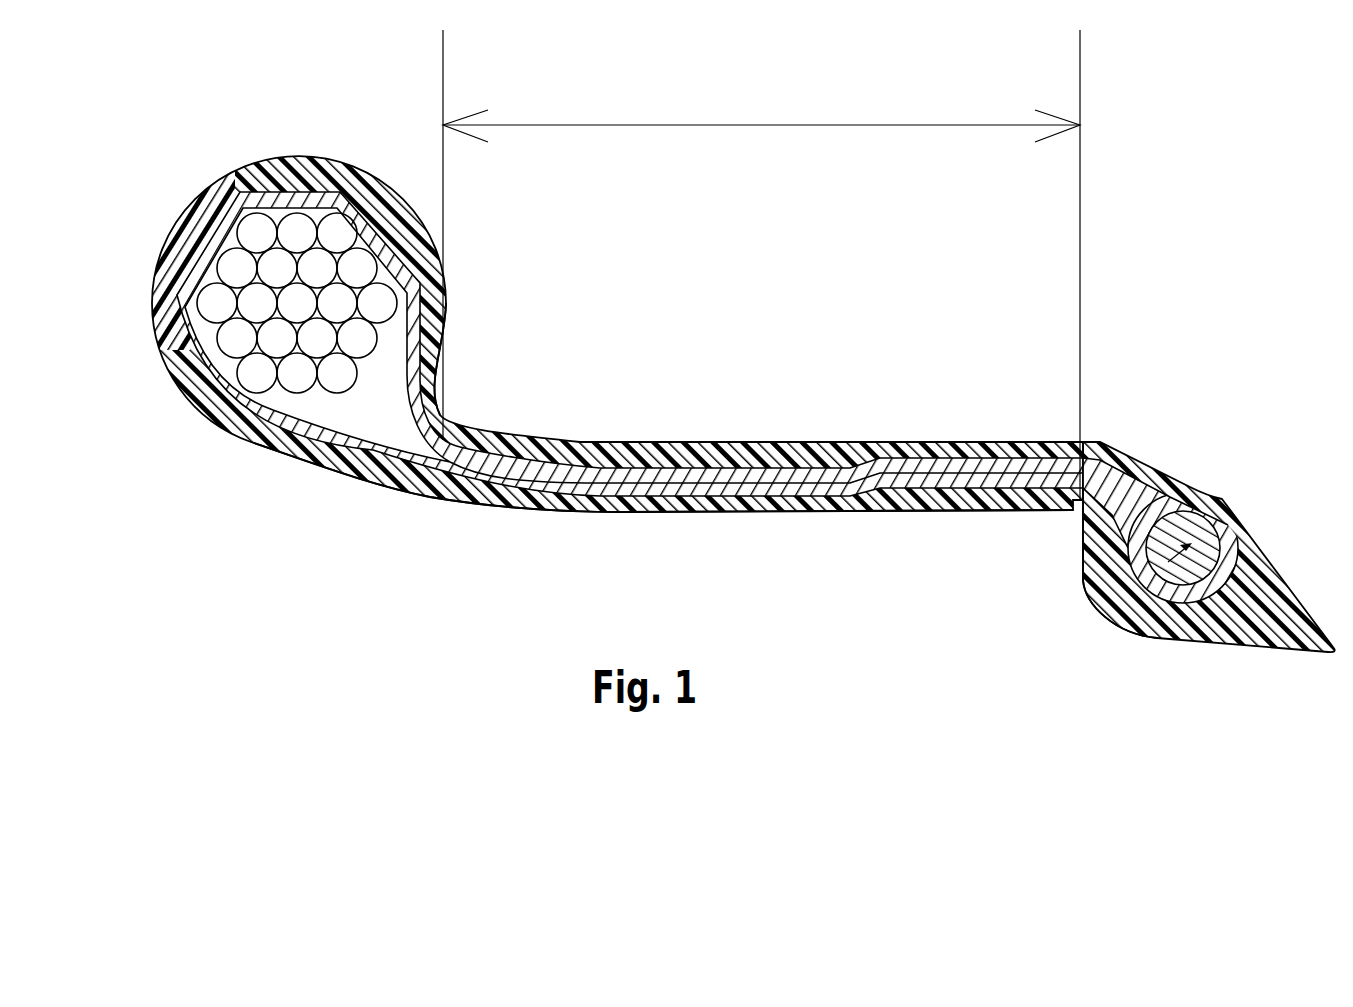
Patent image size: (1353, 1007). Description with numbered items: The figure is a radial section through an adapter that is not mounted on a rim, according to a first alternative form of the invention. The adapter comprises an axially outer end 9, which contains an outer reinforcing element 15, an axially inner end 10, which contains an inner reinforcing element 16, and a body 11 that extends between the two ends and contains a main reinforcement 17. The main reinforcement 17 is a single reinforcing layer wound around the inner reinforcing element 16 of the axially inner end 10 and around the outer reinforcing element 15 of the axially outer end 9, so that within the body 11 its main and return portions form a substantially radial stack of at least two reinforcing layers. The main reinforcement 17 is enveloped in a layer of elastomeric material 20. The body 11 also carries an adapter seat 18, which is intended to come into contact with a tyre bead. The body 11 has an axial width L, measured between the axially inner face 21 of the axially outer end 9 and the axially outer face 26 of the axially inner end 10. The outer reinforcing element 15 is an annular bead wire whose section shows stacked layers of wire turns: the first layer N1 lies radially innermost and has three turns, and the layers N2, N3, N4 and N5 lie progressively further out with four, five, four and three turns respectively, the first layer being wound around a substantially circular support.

The axially outer end 9 is at (357, 166).
The outer reinforcing element 15 is at (335, 284).
The body 11 is at (830, 503).
The adapter seat 18 is at (577, 438).
The main reinforcement 17 is at (900, 503).
The axially inner face of the axially outer end 21 is at (448, 318).
The layer of elastomeric material 20 is at (365, 468).
The axially inner end 10 is at (1240, 520).
The axially outer face of the axially inner end 26 is at (1082, 528).
The inner reinforcing element 16 is at (1143, 633).
The first layer N1 is at (235, 378).
The second layer N2 is at (218, 336).
The third layer N3 is at (197, 304).
The fourth layer N4 is at (218, 266).
The fifth layer N5 is at (237, 229).
The axial width L is at (761, 265).